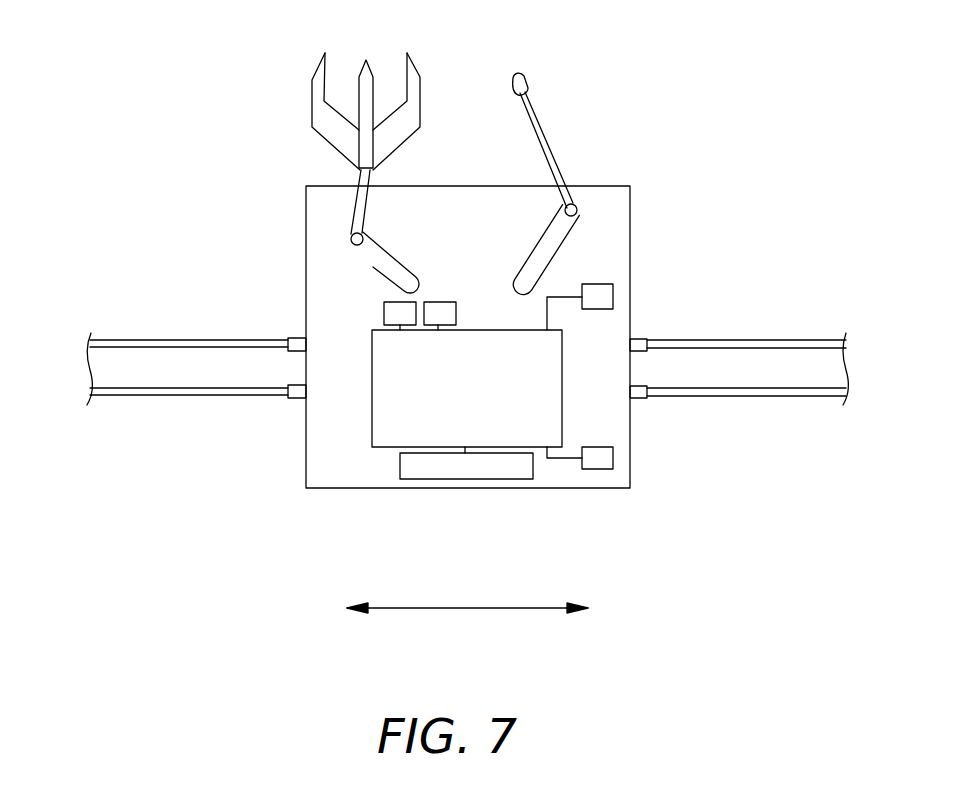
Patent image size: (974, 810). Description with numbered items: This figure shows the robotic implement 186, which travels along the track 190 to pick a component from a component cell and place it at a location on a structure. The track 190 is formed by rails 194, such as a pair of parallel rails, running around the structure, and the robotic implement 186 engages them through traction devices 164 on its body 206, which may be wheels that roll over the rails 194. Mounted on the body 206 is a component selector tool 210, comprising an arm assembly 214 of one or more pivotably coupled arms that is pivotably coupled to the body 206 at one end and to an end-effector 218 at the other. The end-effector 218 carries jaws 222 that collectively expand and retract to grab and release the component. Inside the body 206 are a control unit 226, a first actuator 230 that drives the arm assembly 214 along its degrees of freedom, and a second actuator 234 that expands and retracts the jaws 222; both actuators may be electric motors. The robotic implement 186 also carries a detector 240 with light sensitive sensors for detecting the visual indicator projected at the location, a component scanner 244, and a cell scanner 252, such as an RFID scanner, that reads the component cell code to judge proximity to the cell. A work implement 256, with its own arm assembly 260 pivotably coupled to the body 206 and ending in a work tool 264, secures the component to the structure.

The traction devices 164 is at (292, 358).
The robotic implement 186 is at (858, 78).
The track 190 is at (748, 332).
The rails 194 is at (756, 387).
The body 206 is at (560, 488).
The component selector tool 210 is at (349, 99).
The arm assembly 214 is at (372, 270).
The end-effector 218 is at (311, 97).
The jaws 222 is at (420, 93).
The control unit 226 is at (372, 428).
The first actuator 230 is at (384, 312).
The second actuator 234 is at (437, 302).
The detector 240 is at (601, 310).
The component scanner 244 is at (400, 458).
The cell scanner 252 is at (605, 447).
The work implement 256 is at (580, 164).
The arm assembly 260 is at (565, 168).
The work tool 264 is at (529, 88).